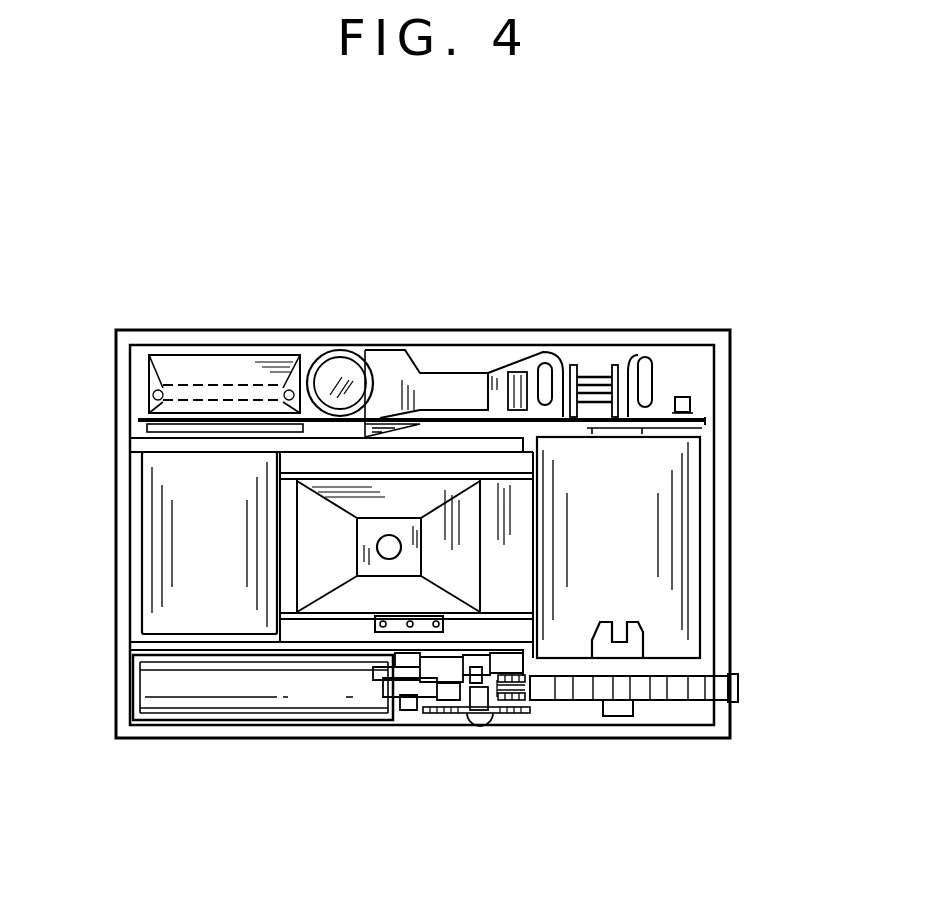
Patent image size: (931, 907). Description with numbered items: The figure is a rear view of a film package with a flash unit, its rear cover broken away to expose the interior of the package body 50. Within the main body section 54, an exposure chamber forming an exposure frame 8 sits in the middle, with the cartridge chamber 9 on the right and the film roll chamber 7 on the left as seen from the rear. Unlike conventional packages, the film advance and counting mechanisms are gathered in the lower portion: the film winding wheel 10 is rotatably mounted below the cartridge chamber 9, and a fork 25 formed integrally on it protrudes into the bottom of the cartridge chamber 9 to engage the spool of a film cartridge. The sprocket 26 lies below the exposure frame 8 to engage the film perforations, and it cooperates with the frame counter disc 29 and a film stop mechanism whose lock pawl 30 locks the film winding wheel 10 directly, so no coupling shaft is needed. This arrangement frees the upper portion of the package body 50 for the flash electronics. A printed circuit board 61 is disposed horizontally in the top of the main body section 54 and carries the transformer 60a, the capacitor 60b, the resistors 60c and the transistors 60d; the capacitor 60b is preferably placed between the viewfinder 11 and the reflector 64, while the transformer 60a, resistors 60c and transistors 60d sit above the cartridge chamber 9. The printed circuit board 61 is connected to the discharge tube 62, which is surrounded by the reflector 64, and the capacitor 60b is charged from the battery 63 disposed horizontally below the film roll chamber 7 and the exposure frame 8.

The package body 50 is at (645, 312).
The main body section 54 is at (733, 492).
The printed circuit board 61 is at (704, 421).
The discharge tube 62 is at (182, 385).
The reflector 64 is at (243, 363).
The capacitor 60b is at (337, 368).
The viewfinder 11 is at (443, 382).
The resistors 60c is at (537, 367).
The transformer 60a is at (597, 375).
The transistors 60d is at (695, 402).
The film roll chamber 7 is at (155, 558).
The exposure frame 8 is at (305, 535).
The cartridge chamber 9 is at (683, 557).
The fork 25 is at (643, 625).
The sprocket 26 is at (383, 632).
The battery 63 is at (173, 707).
The film winding wheel 10 is at (738, 690).
The frame counter disc 29 is at (503, 722).
The lock pawl 30 is at (528, 686).